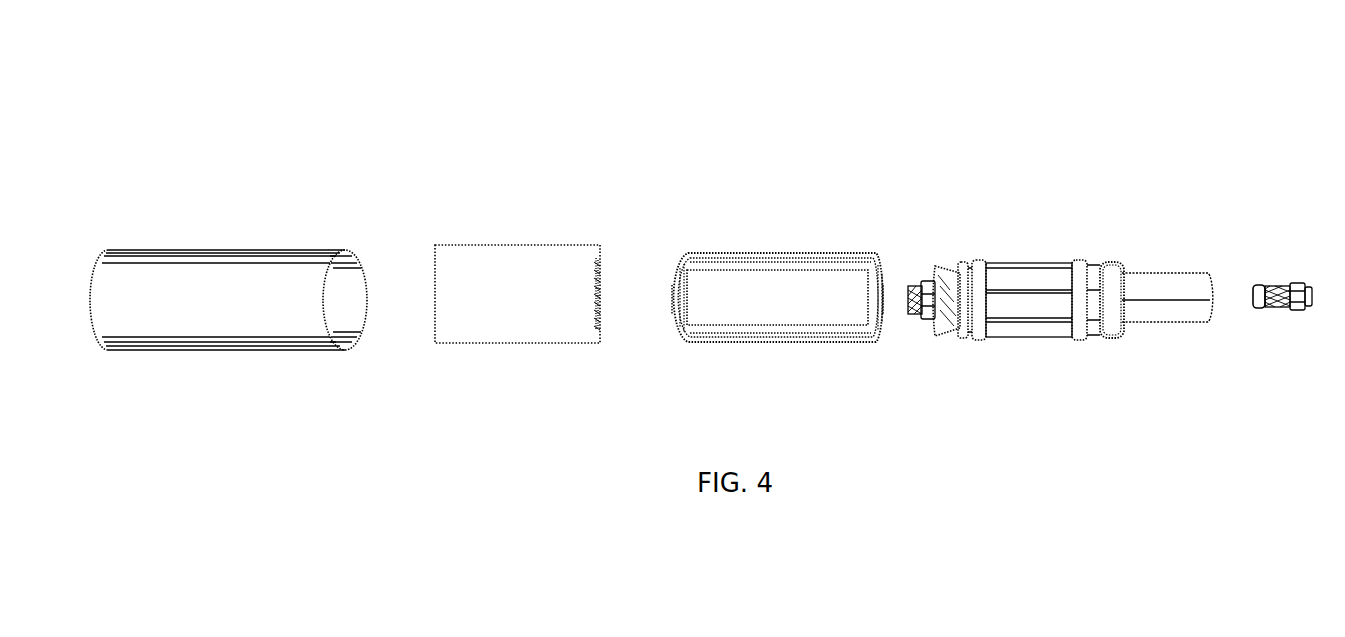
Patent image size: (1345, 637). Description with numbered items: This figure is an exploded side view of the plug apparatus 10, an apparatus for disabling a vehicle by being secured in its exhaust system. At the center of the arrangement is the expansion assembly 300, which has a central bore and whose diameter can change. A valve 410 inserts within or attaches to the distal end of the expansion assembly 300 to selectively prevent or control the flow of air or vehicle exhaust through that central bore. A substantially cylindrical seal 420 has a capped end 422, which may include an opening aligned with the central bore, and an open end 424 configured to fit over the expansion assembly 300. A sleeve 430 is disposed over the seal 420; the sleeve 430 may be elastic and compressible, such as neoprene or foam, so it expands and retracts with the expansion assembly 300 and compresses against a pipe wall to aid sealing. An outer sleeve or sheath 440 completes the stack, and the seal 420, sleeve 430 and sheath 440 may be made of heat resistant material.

The plug apparatus 10 is at (918, 122).
The expansion assembly 300 is at (1055, 263).
The valve 410 is at (1267, 283).
The seal 420 is at (718, 253).
The capped end 422 is at (673, 313).
The open end 424 is at (877, 317).
The sleeve 430 is at (492, 247).
The outer sleeve or sheath 440 is at (255, 252).